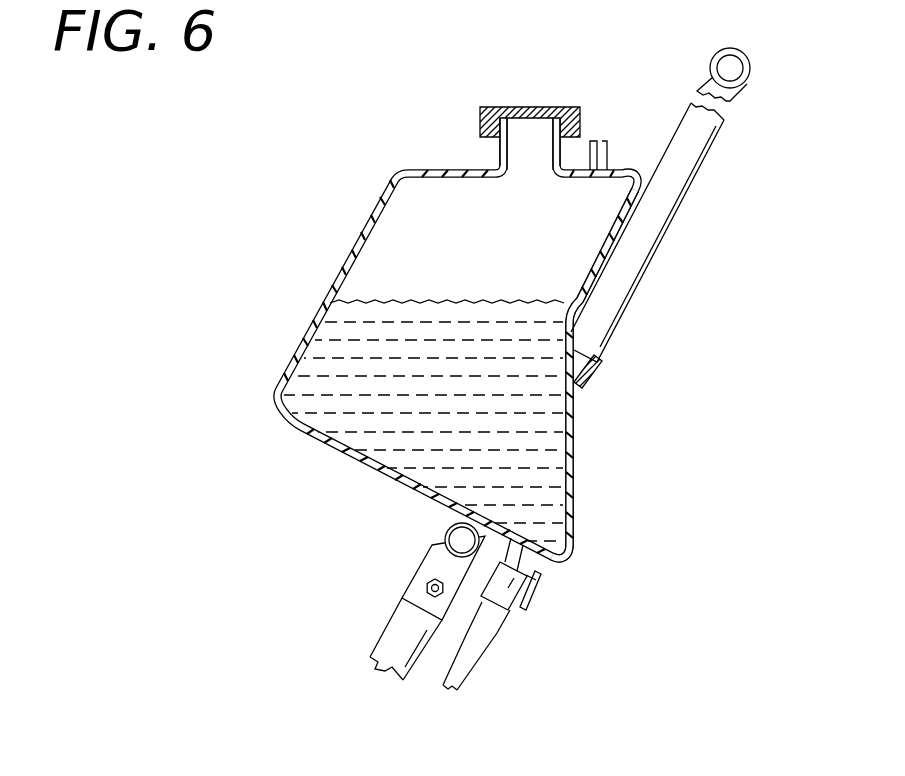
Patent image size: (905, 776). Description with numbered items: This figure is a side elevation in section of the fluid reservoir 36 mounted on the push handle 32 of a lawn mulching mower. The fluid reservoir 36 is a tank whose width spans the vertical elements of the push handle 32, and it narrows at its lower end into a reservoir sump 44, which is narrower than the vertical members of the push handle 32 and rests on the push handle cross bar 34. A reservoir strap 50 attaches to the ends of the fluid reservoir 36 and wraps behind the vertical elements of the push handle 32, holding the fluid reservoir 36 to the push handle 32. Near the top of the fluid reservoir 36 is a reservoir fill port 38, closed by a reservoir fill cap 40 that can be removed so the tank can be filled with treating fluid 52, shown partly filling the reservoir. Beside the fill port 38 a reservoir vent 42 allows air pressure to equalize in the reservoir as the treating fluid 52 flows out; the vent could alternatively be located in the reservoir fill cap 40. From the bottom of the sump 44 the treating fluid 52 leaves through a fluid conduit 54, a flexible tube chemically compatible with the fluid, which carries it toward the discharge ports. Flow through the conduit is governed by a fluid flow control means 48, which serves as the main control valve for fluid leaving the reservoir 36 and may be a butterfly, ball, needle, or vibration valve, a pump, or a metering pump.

The push handle 32 is at (665, 232).
The push handle cross bar 34 is at (428, 546).
The fluid reservoir 36 is at (331, 292).
The reservoir fill port 38 is at (498, 156).
The reservoir fill cap 40 is at (500, 107).
The reservoir vent 42 is at (617, 141).
The reservoir sump 44 is at (574, 518).
The fluid flow control means 48 is at (540, 573).
The reservoir strap 50 is at (598, 378).
The treating fluid 52 is at (313, 410).
The fluid conduit 54 is at (478, 655).